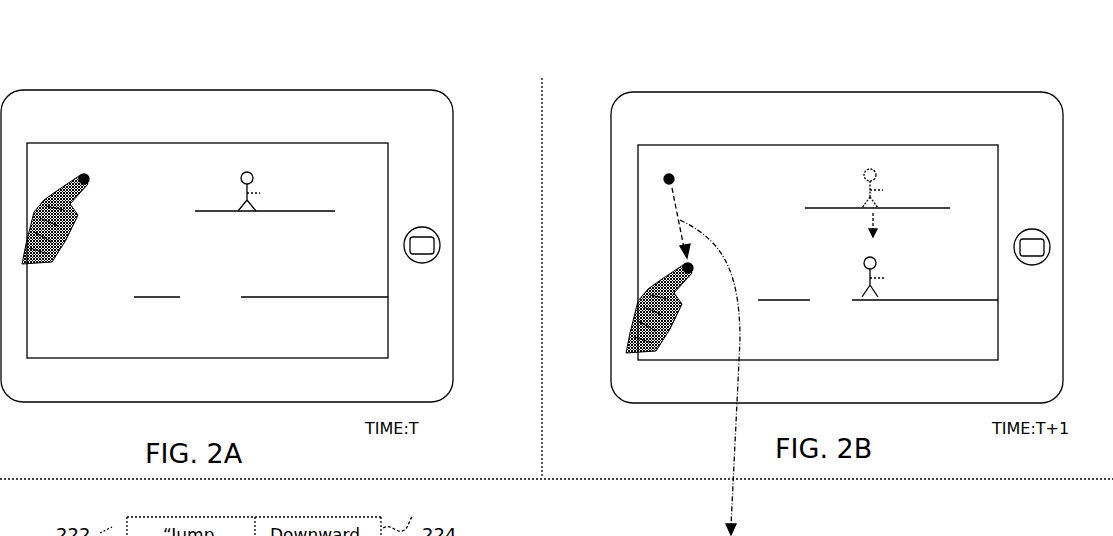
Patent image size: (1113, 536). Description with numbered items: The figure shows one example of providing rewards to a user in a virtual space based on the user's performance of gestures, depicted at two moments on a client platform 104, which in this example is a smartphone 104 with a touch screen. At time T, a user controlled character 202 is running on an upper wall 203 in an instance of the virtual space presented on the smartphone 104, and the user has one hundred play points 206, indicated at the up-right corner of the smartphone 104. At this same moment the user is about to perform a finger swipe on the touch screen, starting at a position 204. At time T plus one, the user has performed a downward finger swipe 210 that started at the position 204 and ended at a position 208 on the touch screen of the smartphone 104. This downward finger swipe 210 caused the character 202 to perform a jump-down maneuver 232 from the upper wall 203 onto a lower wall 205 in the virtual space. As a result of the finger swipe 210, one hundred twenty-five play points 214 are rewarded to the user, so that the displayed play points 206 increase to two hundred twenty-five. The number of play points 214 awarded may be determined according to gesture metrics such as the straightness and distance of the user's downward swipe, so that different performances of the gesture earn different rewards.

In FIG. 2A, the client platform 104 is at (225, 91).
In FIG. 2B, the client platform 104 is at (825, 92).
In FIG. 2A, the user controlled character 202 is at (242, 177).
In FIG. 2B, the user controlled character 202 is at (864, 270).
In FIG. 2A, the upper wall 203 is at (300, 212).
In FIG. 2B, the upper wall 203 is at (935, 209).
In FIG. 2A, the position 204 is at (90, 179).
In FIG. 2B, the position 204 is at (675, 176).
In FIG. 2A, the lower wall 205 is at (283, 298).
In FIG. 2B, the lower wall 205 is at (920, 301).
In FIG. 2A, the play points 206 is at (337, 158).
In FIG. 2B, the play points 206 is at (950, 158).
In FIG. 2B, the position 208 is at (694, 270).
In FIG. 2B, the downward finger swipe 210 is at (684, 221).
In FIG. 2B, the play points 214 is at (735, 199).
In FIG. 2B, the jump-down maneuver 232 is at (878, 223).